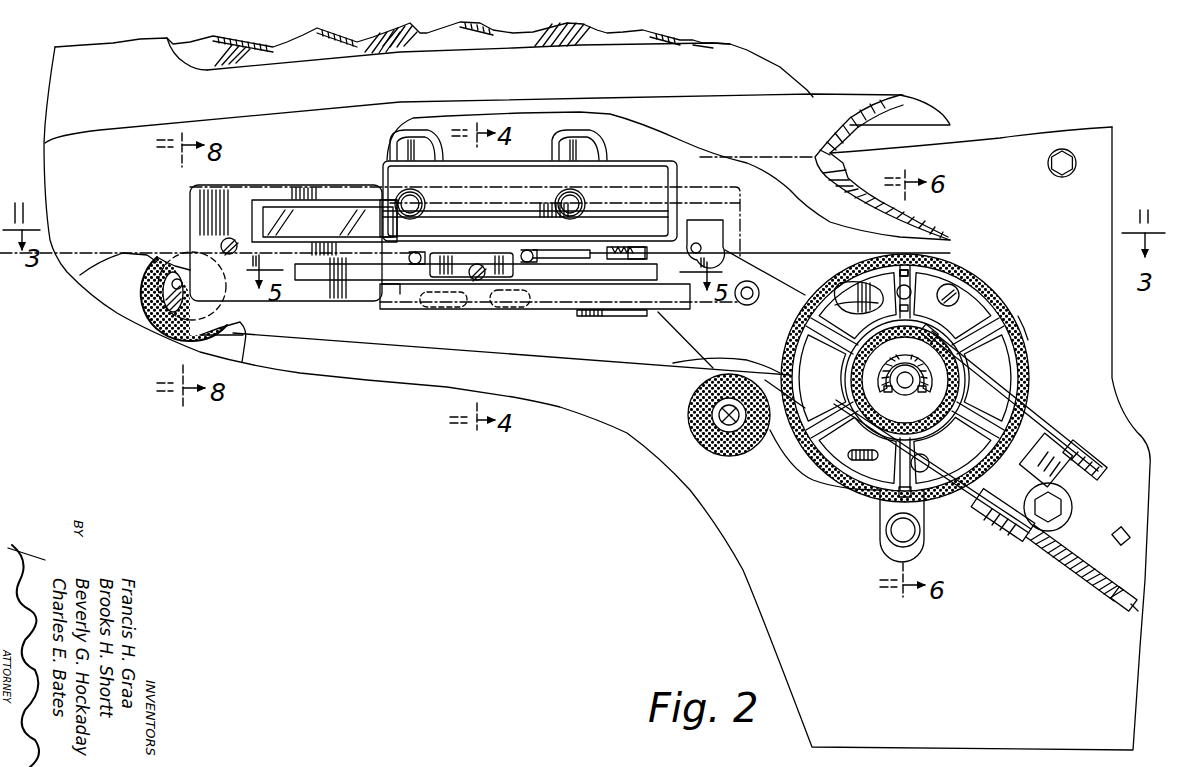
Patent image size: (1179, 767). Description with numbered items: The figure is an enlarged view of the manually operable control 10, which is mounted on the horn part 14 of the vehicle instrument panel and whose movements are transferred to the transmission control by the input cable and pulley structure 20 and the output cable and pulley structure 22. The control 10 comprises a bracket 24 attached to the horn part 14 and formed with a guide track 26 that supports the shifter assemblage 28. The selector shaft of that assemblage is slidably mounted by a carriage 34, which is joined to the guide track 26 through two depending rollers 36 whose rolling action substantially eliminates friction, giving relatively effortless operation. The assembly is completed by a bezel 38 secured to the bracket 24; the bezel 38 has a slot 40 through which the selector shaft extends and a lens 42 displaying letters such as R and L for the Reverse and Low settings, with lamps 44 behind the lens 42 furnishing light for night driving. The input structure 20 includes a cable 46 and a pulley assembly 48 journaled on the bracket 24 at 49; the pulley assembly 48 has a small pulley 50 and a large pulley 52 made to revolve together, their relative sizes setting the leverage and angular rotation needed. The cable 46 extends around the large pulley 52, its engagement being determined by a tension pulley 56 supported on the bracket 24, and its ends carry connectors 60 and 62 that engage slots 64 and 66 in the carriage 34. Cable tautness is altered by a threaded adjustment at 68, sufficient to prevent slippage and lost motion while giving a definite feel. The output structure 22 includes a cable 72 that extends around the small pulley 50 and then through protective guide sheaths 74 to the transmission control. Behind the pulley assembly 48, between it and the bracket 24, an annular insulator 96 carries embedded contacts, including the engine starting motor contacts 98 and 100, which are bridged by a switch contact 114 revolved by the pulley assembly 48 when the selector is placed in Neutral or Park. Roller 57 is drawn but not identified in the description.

The manually operable control 10 is at (657, 318).
The horn part 14 is at (336, 108).
The input cable and pulley structure 20 is at (777, 251).
The output cable and pulley structure 22 is at (1108, 514).
The bracket 24 is at (1062, 433).
The guide track 26 is at (693, 308).
The shifter assemblage 28 is at (465, 280).
The carriage 34 is at (455, 260).
The rollers 36 is at (478, 282).
The bezel 38 is at (216, 184).
The slot 40 is at (308, 268).
The lens 42 is at (272, 215).
The lamps 44 is at (420, 198).
The cable 46 is at (568, 362).
The pulley assembly 48 is at (999, 281).
The journal 49 is at (898, 385).
The small pulley 50 is at (930, 420).
The large pulley 52 is at (1015, 315).
The tension pulley 56 is at (700, 415).
The roller 57 is at (158, 268).
The connector 60 is at (398, 284).
The connector 62 is at (540, 262).
The slot 64 is at (420, 256).
The slot 66 is at (528, 256).
The threaded adjustment 68 is at (612, 253).
The cable 72 is at (1037, 428).
The protective guide sheaths 74 is at (1082, 544).
The annular insulator 96 is at (848, 285).
The engine starting motor contact 98 is at (860, 290).
The engine starting motor contact 100 is at (865, 305).
The switch contact 114 is at (912, 275).